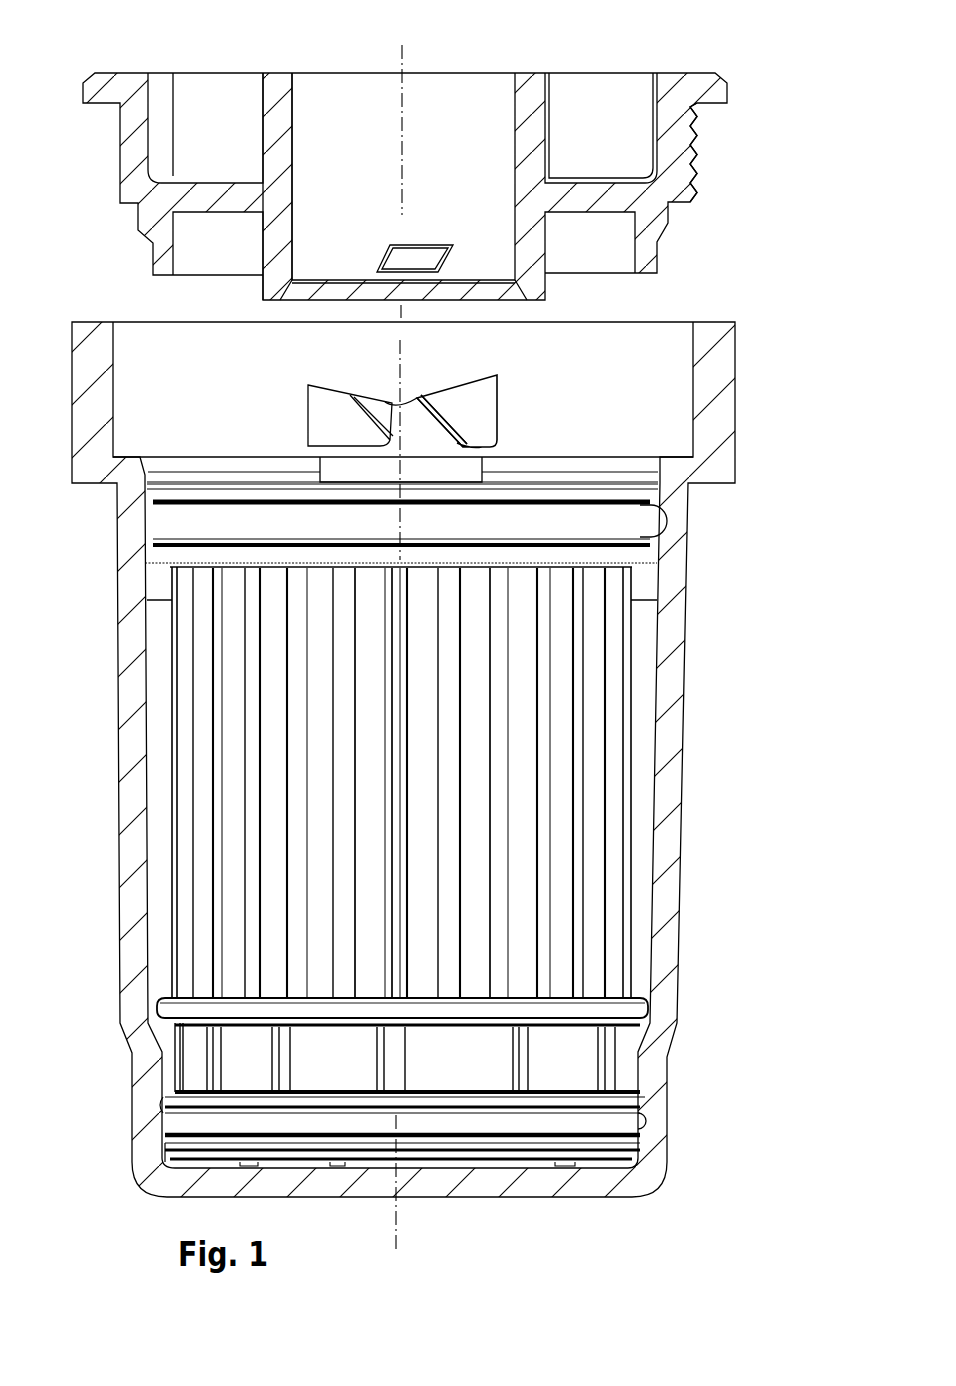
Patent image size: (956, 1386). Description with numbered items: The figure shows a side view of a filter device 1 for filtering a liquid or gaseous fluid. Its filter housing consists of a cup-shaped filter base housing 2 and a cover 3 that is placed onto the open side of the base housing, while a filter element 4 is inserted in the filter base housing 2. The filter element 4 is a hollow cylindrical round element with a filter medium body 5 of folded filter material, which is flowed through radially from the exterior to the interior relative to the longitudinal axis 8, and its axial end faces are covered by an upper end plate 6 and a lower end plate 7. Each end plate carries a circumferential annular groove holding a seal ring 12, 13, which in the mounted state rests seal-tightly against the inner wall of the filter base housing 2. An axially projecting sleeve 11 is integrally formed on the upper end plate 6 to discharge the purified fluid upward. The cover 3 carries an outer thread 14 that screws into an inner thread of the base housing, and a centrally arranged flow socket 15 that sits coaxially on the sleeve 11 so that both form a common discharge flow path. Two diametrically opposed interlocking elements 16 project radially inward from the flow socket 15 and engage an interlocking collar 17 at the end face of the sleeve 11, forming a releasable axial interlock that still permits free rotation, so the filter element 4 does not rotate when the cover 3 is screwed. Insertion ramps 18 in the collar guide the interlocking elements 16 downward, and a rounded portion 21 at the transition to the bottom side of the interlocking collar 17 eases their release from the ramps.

The filter device 1 is at (438, 639).
The filter base housing 2 is at (675, 698).
The cover 3 is at (439, 164).
The filter element 4 is at (403, 411).
The filter medium body 5 is at (605, 813).
The upper end plate 6 is at (215, 493).
The end plate 7 is at (180, 1097).
The longitudinal axis 8 is at (402, 163).
The sleeve 11 is at (412, 422).
The seal ring 12 is at (638, 521).
The seal ring 13 is at (613, 1122).
The thread 14 is at (702, 157).
The flow socket 15 is at (282, 102).
The interlocking elements 16 is at (428, 248).
The interlocking collar 17 is at (497, 418).
The insertion ramps 18 is at (376, 410).
The rounded portion 21 is at (458, 447).